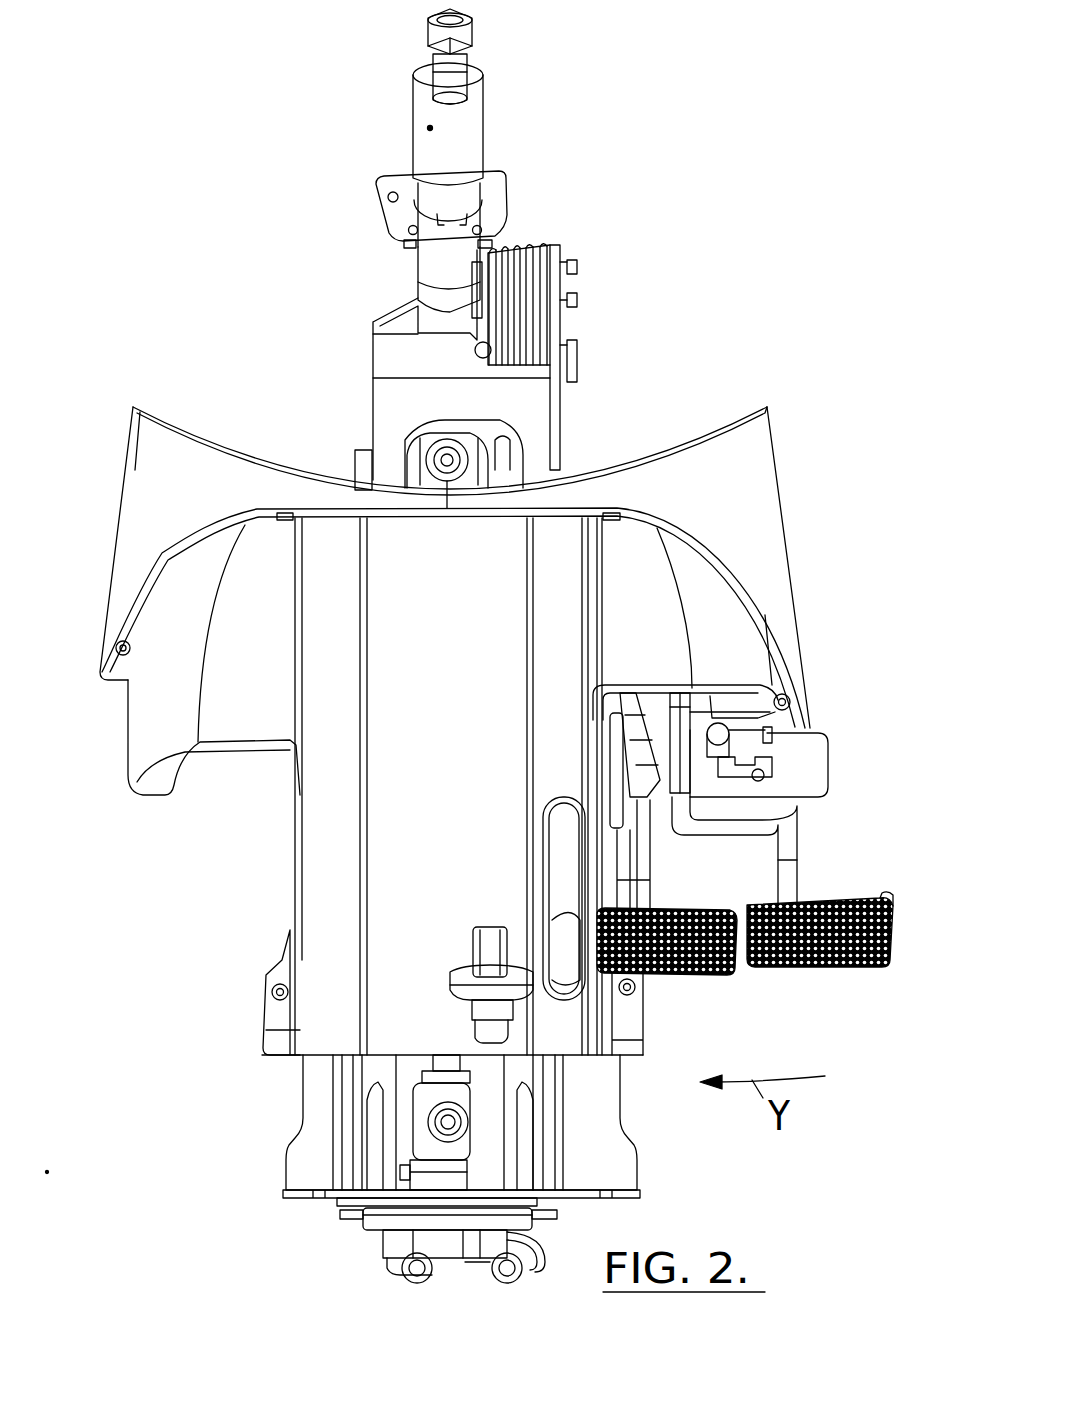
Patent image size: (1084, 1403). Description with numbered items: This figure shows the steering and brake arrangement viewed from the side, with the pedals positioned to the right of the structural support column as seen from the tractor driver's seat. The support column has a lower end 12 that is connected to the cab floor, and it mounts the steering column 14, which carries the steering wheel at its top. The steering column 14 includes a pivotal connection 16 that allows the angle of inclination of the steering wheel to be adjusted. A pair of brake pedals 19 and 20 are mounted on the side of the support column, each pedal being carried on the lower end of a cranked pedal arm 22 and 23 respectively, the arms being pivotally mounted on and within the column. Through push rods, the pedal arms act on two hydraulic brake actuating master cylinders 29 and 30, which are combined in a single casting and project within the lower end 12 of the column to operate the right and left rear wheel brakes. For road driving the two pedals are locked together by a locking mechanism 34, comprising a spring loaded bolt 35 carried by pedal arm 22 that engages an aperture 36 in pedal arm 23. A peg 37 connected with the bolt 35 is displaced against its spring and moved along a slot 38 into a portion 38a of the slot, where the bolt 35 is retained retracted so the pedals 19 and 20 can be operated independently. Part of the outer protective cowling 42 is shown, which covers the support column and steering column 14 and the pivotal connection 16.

The lower end of the support column 12 is at (313, 1135).
The steering column 14 is at (425, 445).
The pivotal connection 16 is at (538, 300).
The brake pedal 19 is at (793, 967).
The brake pedal 20 is at (673, 973).
The pedal arm 22 is at (783, 843).
The pedal arm 23 is at (643, 853).
The master cylinder 29 is at (533, 1242).
The master cylinder 30 is at (393, 1260).
The locking mechanism 34 is at (812, 766).
The spring loaded bolt 35 is at (665, 777).
The aperture 36 is at (643, 780).
The peg 37 is at (765, 730).
The slot 38 is at (753, 752).
The slot portion 38a is at (770, 782).
The outer protective cowling 42 is at (763, 500).